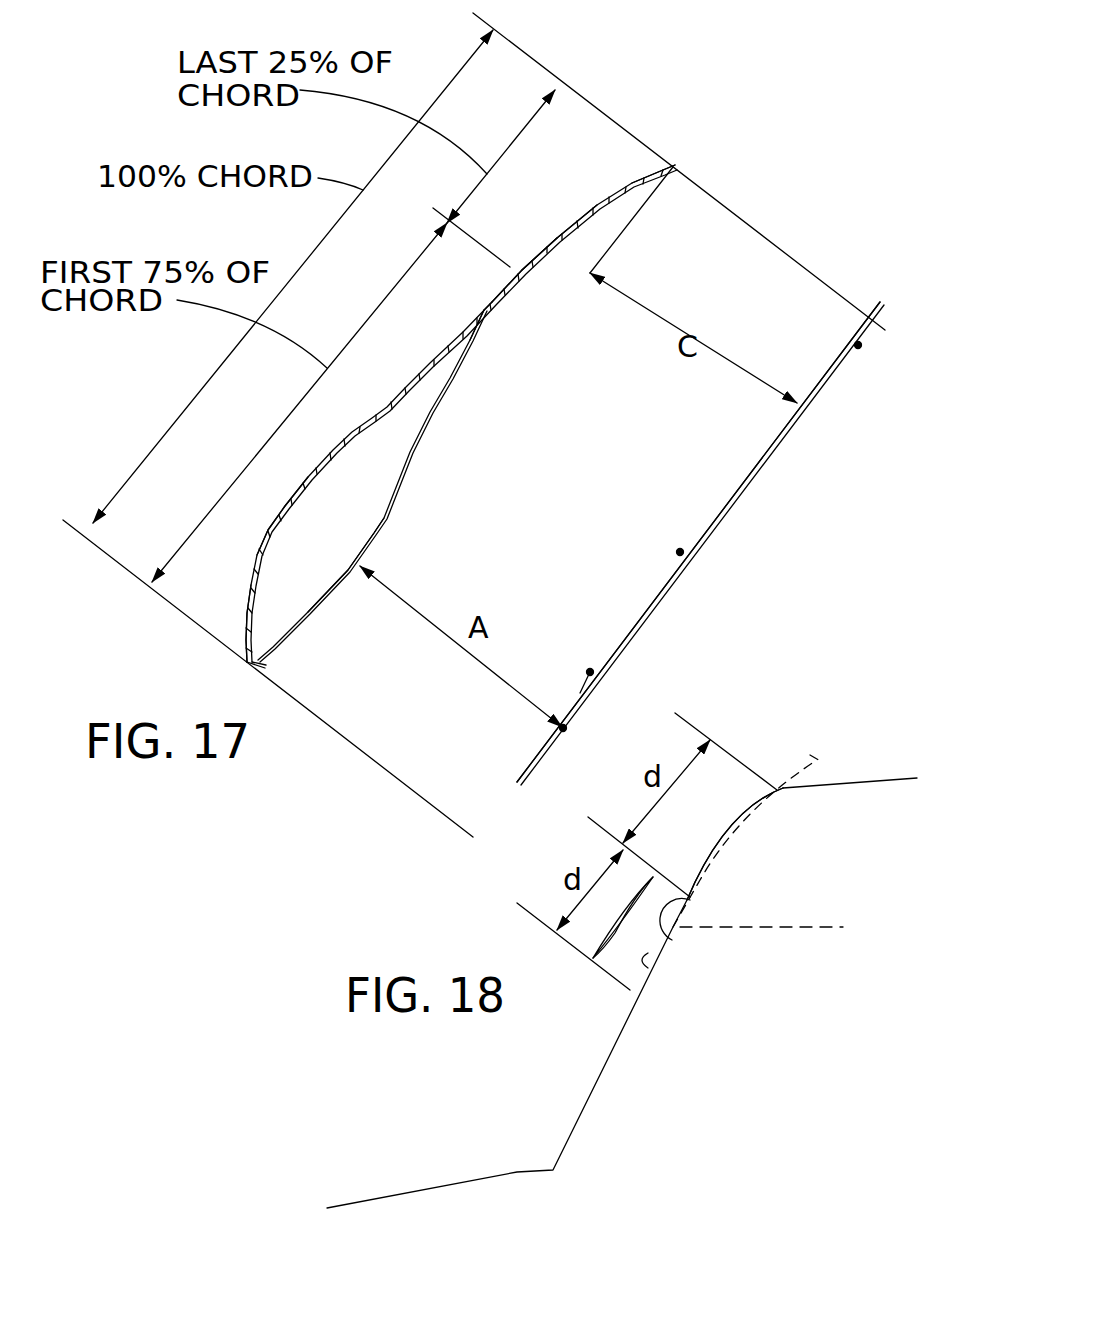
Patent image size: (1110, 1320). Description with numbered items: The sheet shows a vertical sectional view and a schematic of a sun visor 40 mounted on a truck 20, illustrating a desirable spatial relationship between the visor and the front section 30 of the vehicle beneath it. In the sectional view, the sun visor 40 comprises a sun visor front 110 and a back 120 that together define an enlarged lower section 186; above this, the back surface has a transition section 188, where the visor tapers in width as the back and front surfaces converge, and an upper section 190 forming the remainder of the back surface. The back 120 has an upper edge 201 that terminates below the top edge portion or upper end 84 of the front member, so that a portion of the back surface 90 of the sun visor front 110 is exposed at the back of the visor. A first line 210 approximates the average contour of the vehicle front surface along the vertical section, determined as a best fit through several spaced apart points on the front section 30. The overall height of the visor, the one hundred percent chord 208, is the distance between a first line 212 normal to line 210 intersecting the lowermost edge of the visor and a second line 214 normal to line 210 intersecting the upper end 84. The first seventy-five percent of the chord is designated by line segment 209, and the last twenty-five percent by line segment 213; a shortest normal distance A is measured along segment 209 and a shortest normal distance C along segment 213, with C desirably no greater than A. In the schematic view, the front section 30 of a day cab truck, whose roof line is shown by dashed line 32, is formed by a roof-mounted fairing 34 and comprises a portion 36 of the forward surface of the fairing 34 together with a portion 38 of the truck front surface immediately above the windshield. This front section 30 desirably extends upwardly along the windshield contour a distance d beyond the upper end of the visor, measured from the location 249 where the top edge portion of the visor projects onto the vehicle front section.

In FIG. 18, the aircraft wing 20 is at (877, 808).
In FIG. 17, the front section 30 is at (713, 509).
In FIG. 18, the front section 30 is at (714, 857).
In FIG. 18, the roof line 32 is at (783, 932).
In FIG. 18, the fairing 34 is at (728, 858).
In FIG. 18, the portion of the forward surface of the fairing 36 is at (740, 830).
In FIG. 18, the portion of the truck front surface 38 is at (648, 968).
In FIG. 17, the sun visor 40 is at (242, 572).
In FIG. 17, the upper end 84 is at (673, 167).
In FIG. 17, the back surface 90 is at (524, 274).
In FIG. 17, the sun visor front 110 is at (282, 503).
In FIG. 17, the back 120 is at (384, 532).
In FIG. 17, the lower section 186 is at (282, 601).
In FIG. 17, the transition section 188 is at (412, 463).
In FIG. 17, the upper section 190 is at (561, 248).
In FIG. 17, the upper edge 201 is at (484, 312).
In FIG. 17, the chord 208 is at (333, 230).
In FIG. 17, the line segment 209 is at (268, 440).
In FIG. 17, the first line 210 is at (697, 548).
In FIG. 17, the first line 212 is at (333, 727).
In FIG. 17, the line segment 213 is at (523, 131).
In FIG. 17, the second line 214 is at (768, 243).
In FIG. 18, the location 249 is at (672, 940).